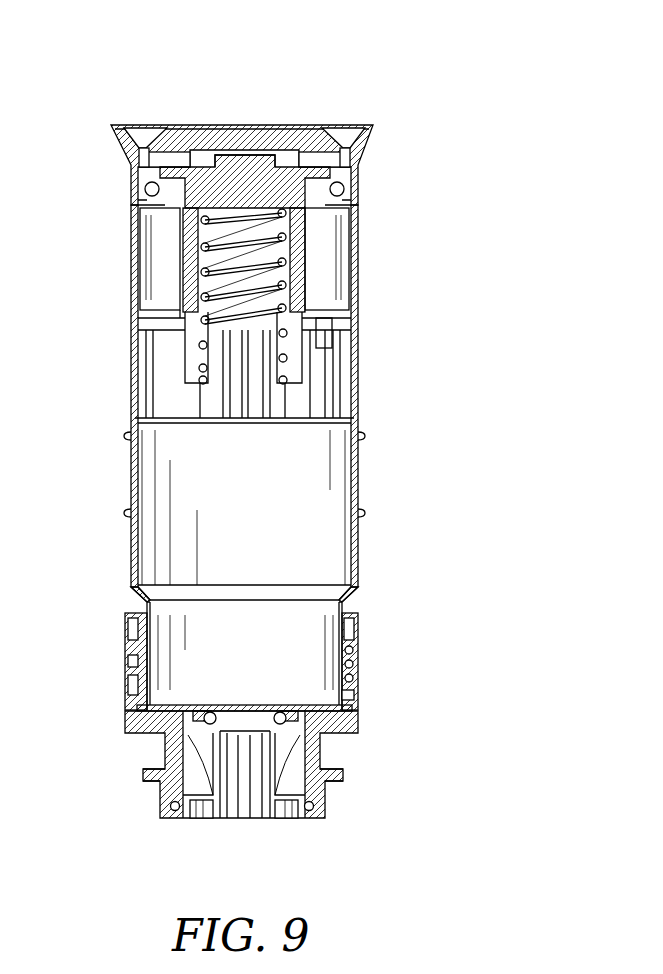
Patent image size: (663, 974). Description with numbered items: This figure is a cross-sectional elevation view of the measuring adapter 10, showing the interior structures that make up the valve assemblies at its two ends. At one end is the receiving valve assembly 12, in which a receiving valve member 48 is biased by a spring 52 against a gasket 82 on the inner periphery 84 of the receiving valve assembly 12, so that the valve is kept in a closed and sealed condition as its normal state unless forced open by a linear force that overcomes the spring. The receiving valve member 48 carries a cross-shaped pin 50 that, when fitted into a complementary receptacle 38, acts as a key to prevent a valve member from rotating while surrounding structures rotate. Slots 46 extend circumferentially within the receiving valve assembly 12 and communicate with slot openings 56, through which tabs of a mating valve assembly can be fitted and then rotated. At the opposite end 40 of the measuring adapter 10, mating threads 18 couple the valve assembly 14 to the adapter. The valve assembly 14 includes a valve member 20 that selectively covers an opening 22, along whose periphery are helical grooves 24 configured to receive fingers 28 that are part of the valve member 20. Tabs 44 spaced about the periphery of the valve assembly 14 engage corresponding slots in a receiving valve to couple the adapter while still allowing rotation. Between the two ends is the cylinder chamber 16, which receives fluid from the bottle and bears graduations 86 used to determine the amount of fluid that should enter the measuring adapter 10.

The measuring adapter 10 is at (448, 320).
The receiving valve assembly 12 is at (143, 118).
The valve assembly 14 is at (372, 715).
The cylinder chamber 16 is at (134, 465).
The mating threads 18 is at (352, 660).
The valve member 20 is at (303, 817).
The opening 22 is at (195, 775).
The helical grooves 24 is at (140, 675).
The fingers 28 is at (285, 718).
The receptacle 38 is at (245, 817).
The end 40 is at (370, 598).
The tabs 44 is at (145, 773).
The slots 46 is at (170, 152).
The receiving valve member 48 is at (200, 173).
The pin 50 is at (233, 172).
The spring 52 is at (203, 248).
The slot openings 56 is at (135, 121).
The gasket 82 is at (147, 183).
The inner periphery 84 is at (150, 208).
The graduations 86 is at (130, 511).